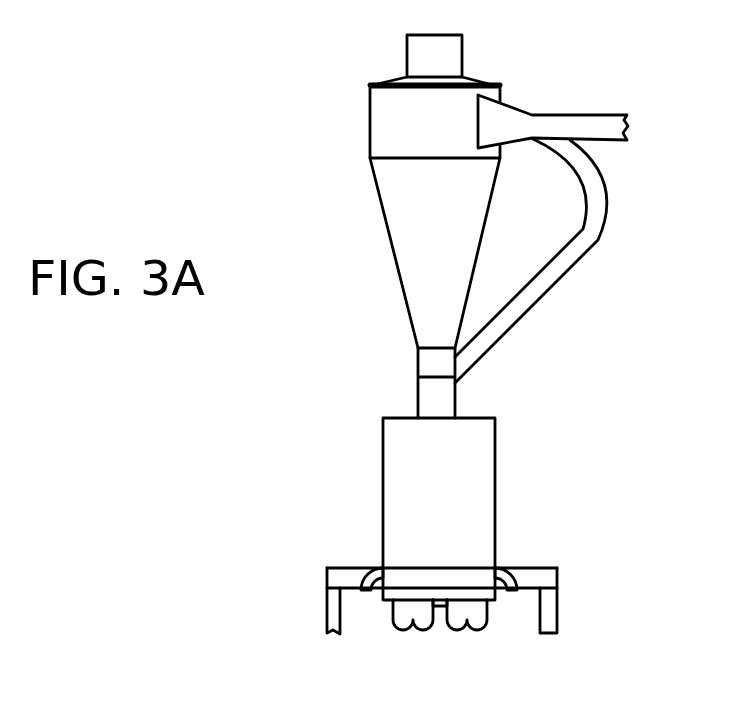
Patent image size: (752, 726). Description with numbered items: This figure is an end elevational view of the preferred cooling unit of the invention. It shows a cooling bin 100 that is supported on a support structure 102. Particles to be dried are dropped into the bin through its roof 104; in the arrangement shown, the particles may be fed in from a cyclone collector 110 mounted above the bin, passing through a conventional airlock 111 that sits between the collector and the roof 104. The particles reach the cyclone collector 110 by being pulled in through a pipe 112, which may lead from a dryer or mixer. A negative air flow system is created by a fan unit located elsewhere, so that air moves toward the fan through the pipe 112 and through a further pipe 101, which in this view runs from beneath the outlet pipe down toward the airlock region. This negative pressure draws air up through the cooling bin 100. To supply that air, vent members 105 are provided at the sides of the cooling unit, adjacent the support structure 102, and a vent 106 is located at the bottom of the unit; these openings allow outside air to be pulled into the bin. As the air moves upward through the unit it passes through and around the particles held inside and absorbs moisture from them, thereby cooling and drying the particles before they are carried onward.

The cooling bin 100 is at (366, 501).
The pipe 101 is at (573, 264).
The support structure 102 is at (537, 567).
The roof 104 is at (397, 418).
The vent members 105 is at (358, 570).
The vent 106 is at (439, 607).
The cyclone collector 110 is at (372, 172).
The airlock 111 is at (418, 367).
The pipe 112 is at (600, 115).